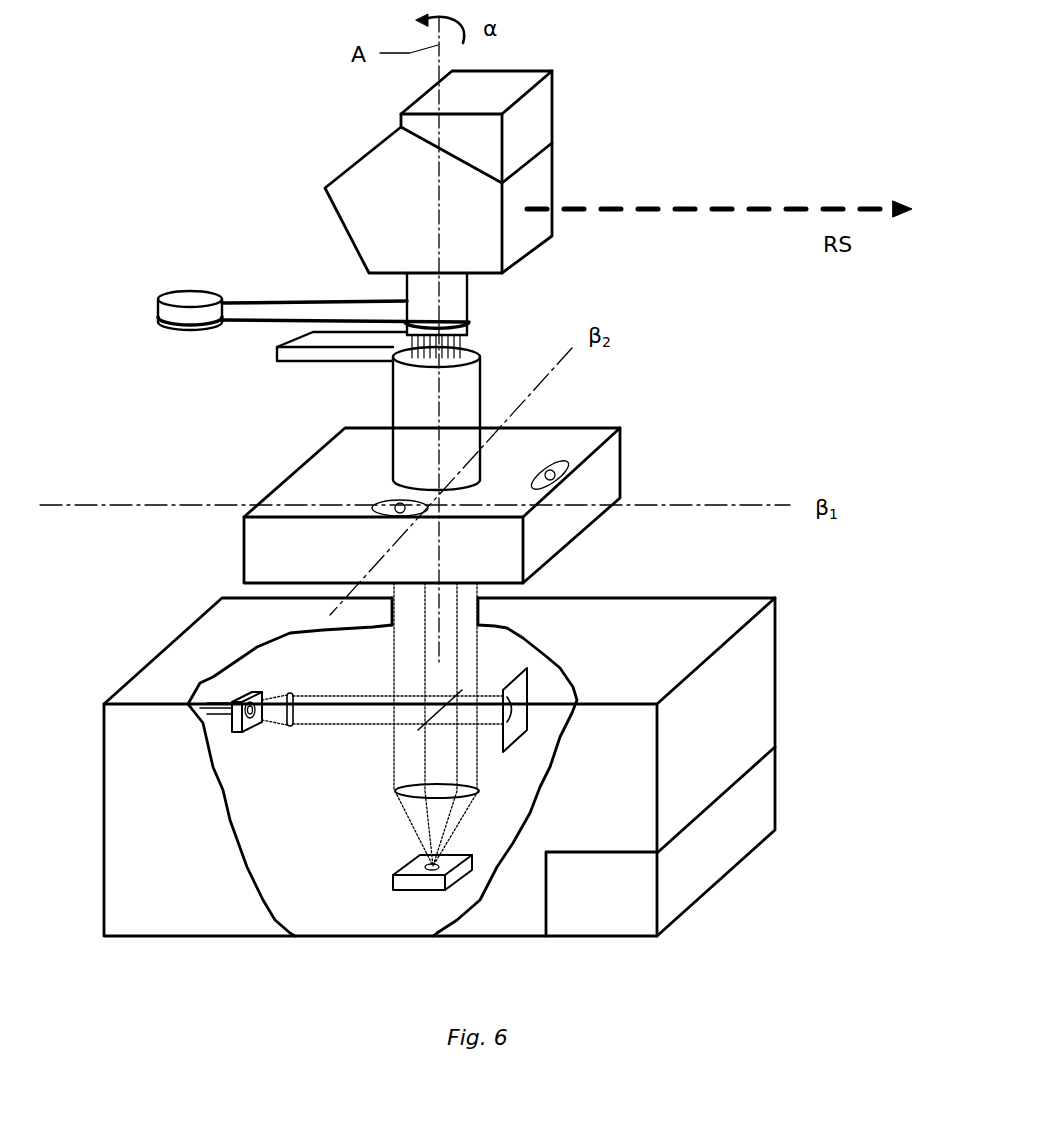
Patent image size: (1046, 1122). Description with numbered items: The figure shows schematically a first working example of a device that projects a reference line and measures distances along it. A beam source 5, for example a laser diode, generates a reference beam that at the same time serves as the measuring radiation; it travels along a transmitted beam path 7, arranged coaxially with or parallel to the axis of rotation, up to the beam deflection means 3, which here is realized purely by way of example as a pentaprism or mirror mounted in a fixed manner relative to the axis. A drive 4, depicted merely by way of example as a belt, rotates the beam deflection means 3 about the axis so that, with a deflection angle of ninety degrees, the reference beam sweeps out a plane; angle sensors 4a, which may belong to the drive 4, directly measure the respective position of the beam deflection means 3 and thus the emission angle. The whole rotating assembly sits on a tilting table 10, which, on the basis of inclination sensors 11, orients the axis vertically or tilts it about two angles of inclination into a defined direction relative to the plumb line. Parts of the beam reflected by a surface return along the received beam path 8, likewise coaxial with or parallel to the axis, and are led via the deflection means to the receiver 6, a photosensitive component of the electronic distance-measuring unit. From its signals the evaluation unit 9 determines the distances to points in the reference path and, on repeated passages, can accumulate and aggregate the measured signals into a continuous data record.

The beam deflection means 3 is at (373, 177).
The drive 4 is at (152, 260).
The angle sensors 4a is at (300, 351).
The beam source 5 is at (237, 723).
The receiver 6 is at (415, 883).
The transmitted beam path 7 is at (457, 655).
The received beam path 8 is at (396, 683).
The evaluation unit 9 is at (623, 907).
The tilting table 10 is at (610, 488).
The inclination sensors 11 is at (393, 512).